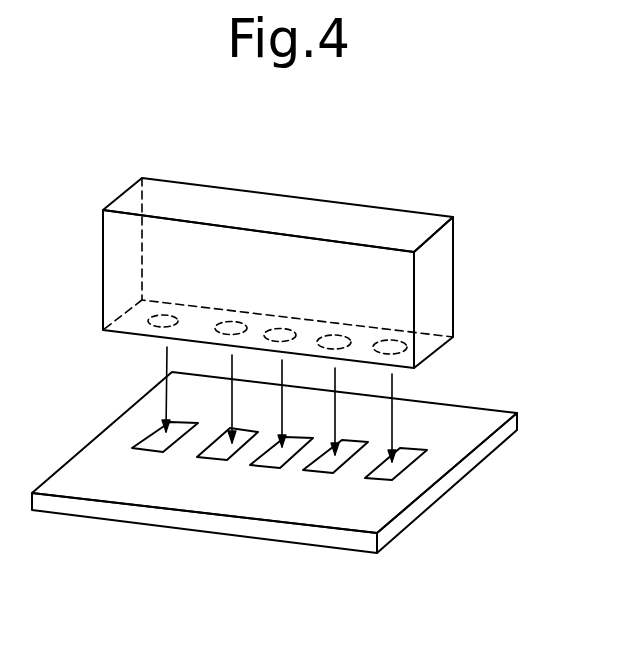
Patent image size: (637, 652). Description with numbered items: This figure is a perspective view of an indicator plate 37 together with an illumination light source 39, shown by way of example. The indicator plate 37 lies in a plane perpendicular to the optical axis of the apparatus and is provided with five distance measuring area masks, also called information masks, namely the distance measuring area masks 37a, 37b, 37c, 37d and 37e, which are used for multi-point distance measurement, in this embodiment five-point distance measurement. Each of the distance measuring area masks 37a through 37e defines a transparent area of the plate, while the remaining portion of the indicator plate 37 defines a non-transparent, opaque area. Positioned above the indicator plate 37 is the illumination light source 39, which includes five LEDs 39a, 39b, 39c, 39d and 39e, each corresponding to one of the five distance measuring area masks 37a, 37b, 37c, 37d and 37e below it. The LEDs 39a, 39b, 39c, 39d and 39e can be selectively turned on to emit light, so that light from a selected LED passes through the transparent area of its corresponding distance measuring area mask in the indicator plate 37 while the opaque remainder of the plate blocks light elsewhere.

The indicator plate 37 is at (427, 510).
The distance measuring area mask 37a is at (150, 448).
The distance measuring area mask 37b is at (210, 455).
The distance measuring area mask 37c is at (260, 463).
The distance measuring area mask 37d is at (320, 470).
The distance measuring area mask 37e is at (380, 478).
The illumination light source 39 is at (448, 236).
The LED 39a is at (154, 276).
The LED 39b is at (217, 281).
The LED 39c is at (279, 283).
The LED 39d is at (346, 287).
The LED 39e is at (406, 291).